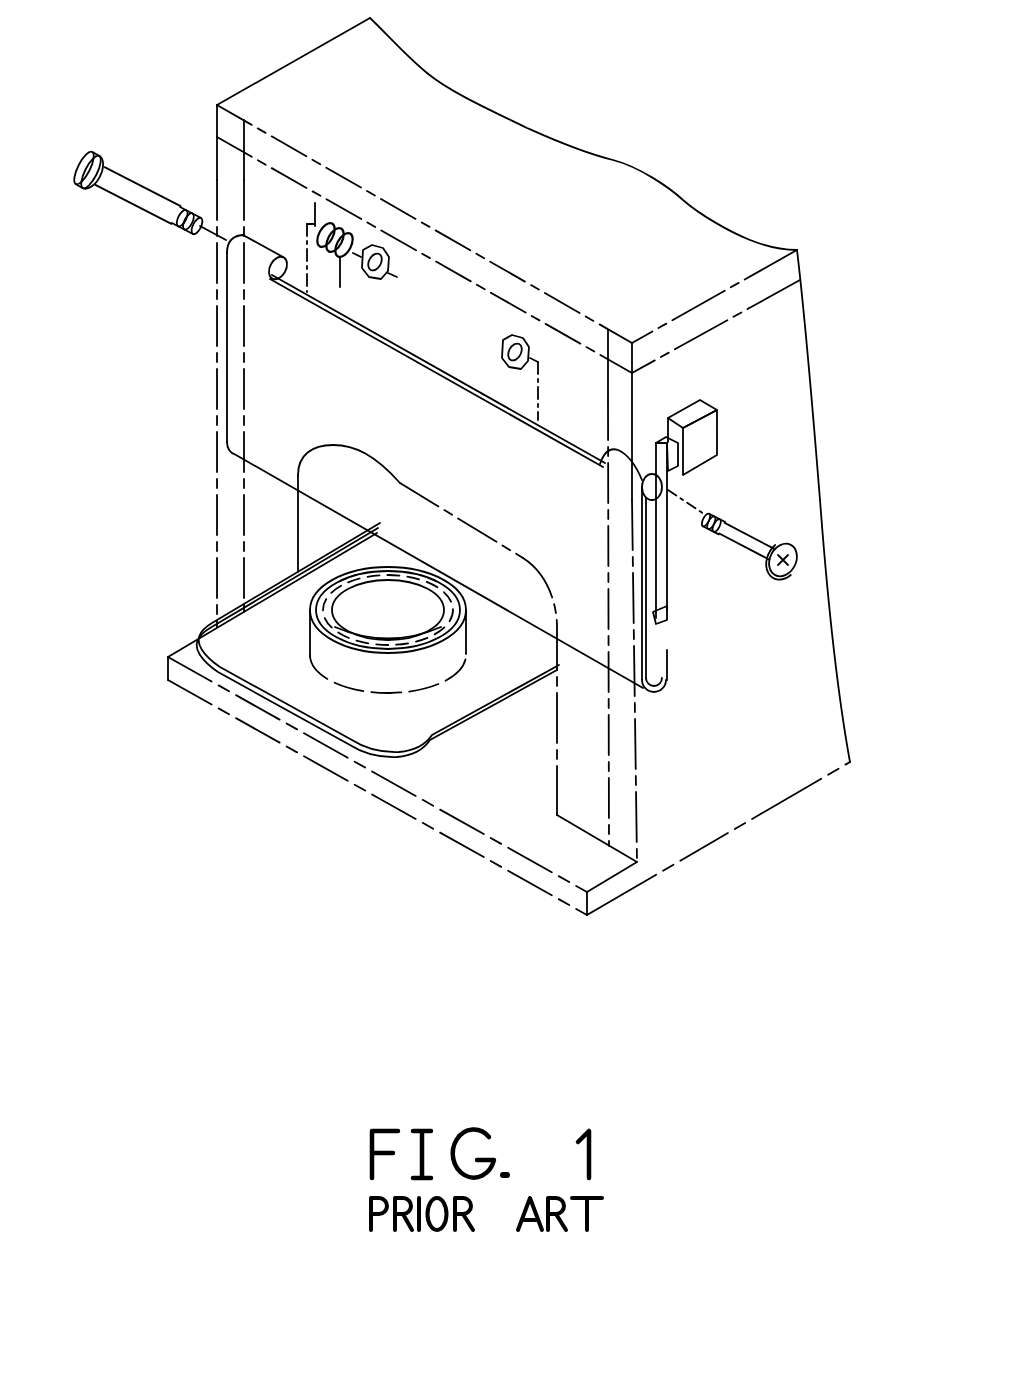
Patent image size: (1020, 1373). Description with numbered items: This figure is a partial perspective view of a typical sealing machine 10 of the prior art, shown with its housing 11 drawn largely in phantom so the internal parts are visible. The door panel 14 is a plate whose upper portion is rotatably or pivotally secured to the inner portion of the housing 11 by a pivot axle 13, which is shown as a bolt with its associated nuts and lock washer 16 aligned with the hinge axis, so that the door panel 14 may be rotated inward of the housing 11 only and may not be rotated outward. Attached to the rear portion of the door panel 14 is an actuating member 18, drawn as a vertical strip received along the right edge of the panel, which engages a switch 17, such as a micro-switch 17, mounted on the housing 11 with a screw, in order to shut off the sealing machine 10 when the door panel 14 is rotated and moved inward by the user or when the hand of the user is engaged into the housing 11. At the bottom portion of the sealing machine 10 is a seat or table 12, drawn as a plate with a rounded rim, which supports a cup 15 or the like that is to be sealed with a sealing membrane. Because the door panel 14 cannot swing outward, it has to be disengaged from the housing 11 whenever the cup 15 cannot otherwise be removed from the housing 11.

The sealing machine 10 is at (750, 230).
The housing 11 is at (785, 362).
The table 12 is at (530, 733).
The pivot axle 13 is at (124, 192).
The door panel 14 is at (262, 393).
The cup 15 is at (360, 665).
The lock washer and nut 16 is at (337, 228).
The micro-switch 17 is at (700, 437).
The actuating member 18 is at (663, 580).